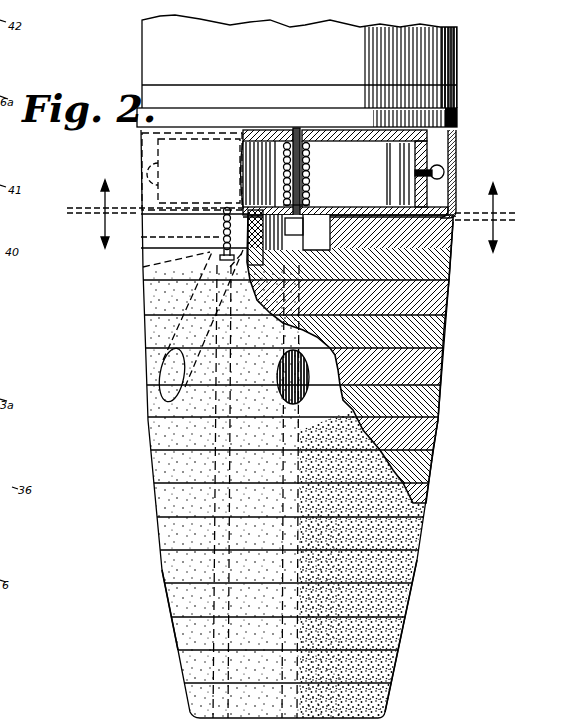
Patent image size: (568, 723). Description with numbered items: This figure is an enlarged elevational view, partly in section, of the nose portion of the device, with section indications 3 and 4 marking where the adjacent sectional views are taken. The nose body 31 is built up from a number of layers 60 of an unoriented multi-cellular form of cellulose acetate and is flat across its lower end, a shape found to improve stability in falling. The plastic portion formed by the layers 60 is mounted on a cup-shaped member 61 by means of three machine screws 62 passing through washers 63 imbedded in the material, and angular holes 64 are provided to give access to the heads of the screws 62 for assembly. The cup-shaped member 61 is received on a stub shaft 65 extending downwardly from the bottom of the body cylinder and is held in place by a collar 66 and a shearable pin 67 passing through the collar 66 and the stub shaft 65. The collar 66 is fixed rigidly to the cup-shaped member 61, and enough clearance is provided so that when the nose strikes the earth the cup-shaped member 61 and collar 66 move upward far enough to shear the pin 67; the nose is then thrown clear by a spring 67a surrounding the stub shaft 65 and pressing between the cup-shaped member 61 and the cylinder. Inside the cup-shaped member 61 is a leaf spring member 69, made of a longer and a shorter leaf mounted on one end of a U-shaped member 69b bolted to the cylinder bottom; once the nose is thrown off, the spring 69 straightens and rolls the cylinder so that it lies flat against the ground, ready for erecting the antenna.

The tire tread body 31 is at (164, 617).
The layers 60 is at (405, 650).
The cup-shaped member 61 is at (457, 143).
The machine screws 62 is at (222, 237).
The washers 63 is at (210, 256).
The angular holes 64 is at (280, 335).
The stub shaft 65 is at (310, 157).
The collar 66 is at (300, 236).
The shearable pin 67 is at (309, 204).
The spring 67a is at (312, 172).
The leaf spring member 69 is at (443, 172).
The U-shaped member 69b is at (283, 108).
The section line 3- 3 is at (291, 232).
The section line 4- 4 is at (297, 213).